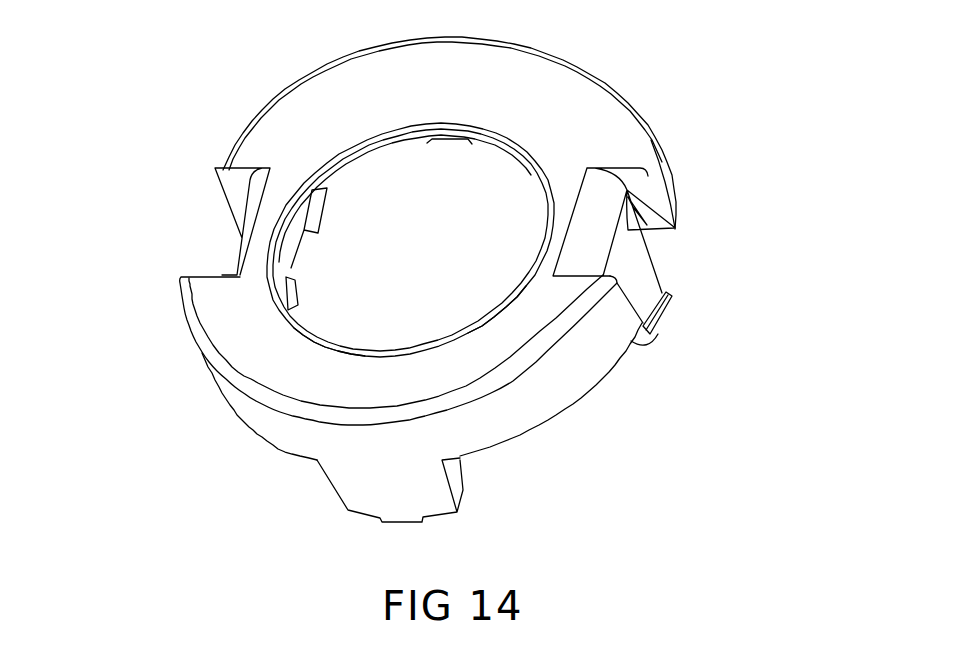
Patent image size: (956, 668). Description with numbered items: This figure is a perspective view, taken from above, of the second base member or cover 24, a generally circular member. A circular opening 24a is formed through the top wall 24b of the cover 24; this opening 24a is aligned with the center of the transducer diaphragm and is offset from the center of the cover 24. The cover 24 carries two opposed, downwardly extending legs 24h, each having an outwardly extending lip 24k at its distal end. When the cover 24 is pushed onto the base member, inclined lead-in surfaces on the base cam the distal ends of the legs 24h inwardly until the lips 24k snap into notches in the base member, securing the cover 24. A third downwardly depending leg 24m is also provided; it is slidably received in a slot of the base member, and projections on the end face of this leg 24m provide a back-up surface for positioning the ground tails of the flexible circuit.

The cover 24 is at (634, 103).
The legs 24h is at (238, 240).
The lip 24k is at (663, 315).
The third downwardly depending leg 24m is at (370, 485).
The circular opening 24a is at (323, 347).
The top wall 24b is at (520, 322).